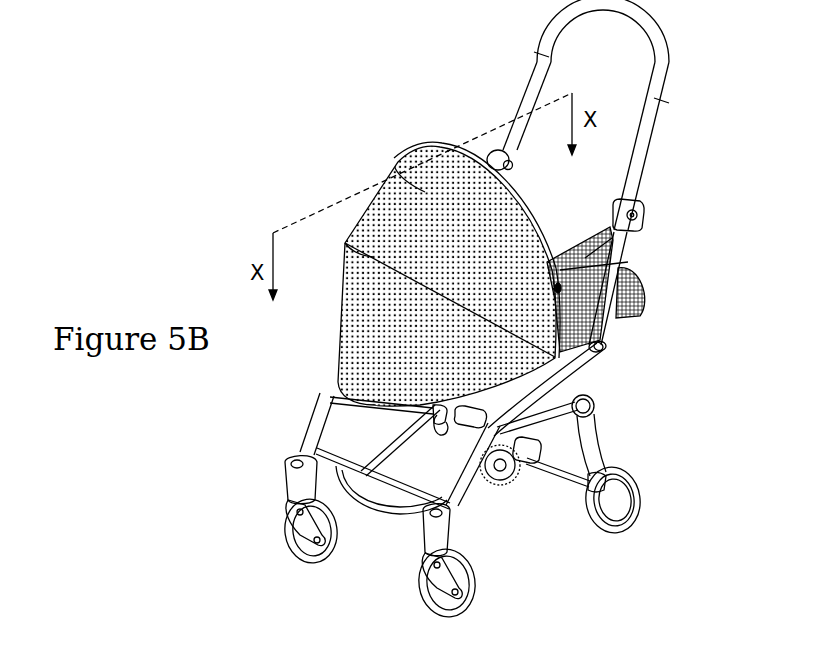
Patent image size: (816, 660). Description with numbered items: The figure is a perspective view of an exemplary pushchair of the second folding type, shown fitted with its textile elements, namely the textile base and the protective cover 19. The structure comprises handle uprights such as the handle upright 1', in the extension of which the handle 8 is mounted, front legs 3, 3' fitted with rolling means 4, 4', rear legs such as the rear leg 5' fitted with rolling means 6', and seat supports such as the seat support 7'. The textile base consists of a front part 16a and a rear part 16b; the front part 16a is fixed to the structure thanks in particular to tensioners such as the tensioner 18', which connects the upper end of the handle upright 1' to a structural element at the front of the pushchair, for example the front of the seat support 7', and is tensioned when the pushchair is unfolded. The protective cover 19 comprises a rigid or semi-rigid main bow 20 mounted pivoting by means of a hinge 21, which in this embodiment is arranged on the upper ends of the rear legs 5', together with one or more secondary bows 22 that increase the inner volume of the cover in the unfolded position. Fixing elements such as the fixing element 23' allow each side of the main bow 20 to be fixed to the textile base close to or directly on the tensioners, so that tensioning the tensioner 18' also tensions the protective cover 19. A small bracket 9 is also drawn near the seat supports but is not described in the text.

The handle 8 is at (550, 10).
The main bow 20 is at (437, 143).
The protective cover 19 is at (427, 193).
The secondary bow 22 is at (373, 257).
The tensioner 18' is at (592, 215).
The handle upright 1' is at (659, 273).
The front part of the textile base 16a is at (630, 273).
The rear part of the textile base 16b is at (633, 313).
The fixing element 23' is at (625, 289).
The hinge 21 is at (563, 380).
The seat support 7' is at (622, 398).
The rear leg 5' is at (611, 450).
The rolling means 6' is at (634, 500).
The front leg 3 is at (293, 447).
The front leg 3' is at (479, 489).
The rolling means 4 is at (284, 531).
The rolling means 4' is at (471, 584).
The bracket 9 is at (437, 432).